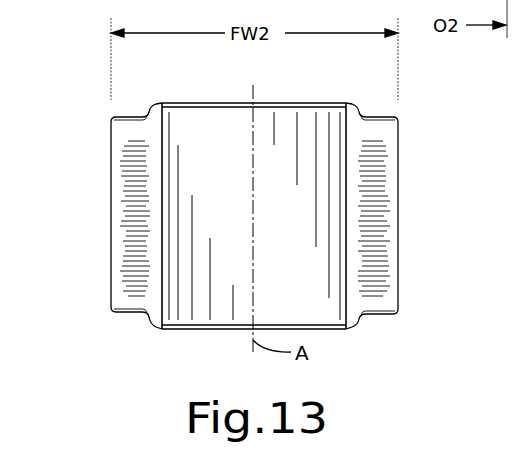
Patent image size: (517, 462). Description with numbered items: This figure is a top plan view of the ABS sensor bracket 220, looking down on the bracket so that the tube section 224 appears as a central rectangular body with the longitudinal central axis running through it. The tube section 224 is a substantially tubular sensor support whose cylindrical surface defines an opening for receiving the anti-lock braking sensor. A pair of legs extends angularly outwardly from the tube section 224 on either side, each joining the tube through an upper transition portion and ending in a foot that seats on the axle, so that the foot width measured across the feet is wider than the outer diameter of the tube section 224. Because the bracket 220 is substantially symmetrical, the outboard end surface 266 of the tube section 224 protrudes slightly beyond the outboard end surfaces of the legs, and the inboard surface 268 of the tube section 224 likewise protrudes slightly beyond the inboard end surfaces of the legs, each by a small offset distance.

The ABS sensor bracket 220 is at (402, 372).
The tube section 224 is at (222, 148).
The outboard end surface of tube section 266 is at (276, 108).
The inboard surface of tube section 268 is at (197, 330).